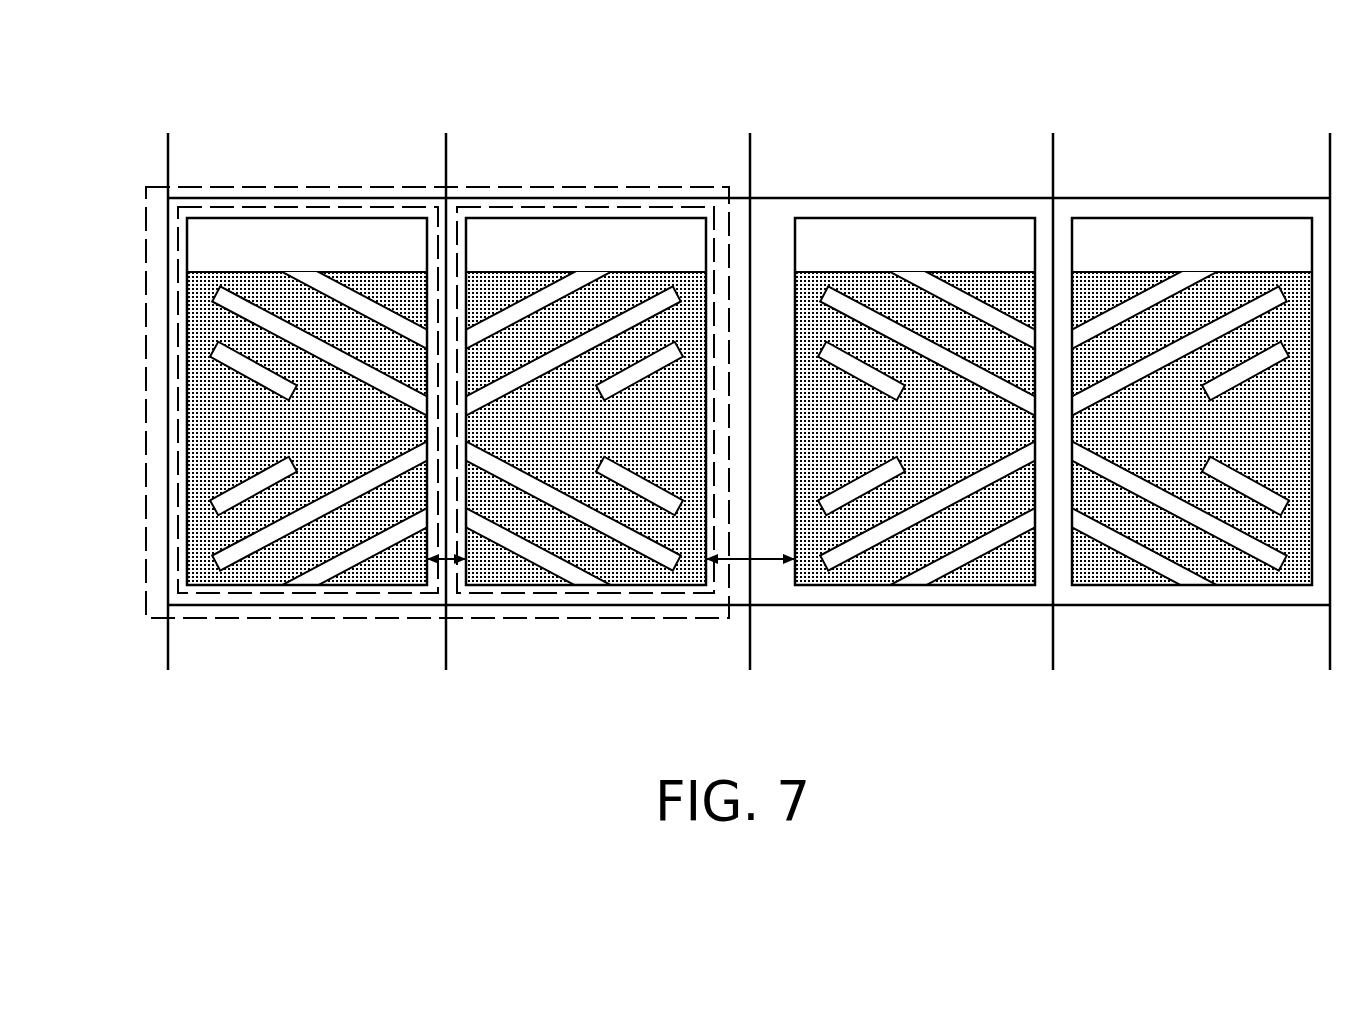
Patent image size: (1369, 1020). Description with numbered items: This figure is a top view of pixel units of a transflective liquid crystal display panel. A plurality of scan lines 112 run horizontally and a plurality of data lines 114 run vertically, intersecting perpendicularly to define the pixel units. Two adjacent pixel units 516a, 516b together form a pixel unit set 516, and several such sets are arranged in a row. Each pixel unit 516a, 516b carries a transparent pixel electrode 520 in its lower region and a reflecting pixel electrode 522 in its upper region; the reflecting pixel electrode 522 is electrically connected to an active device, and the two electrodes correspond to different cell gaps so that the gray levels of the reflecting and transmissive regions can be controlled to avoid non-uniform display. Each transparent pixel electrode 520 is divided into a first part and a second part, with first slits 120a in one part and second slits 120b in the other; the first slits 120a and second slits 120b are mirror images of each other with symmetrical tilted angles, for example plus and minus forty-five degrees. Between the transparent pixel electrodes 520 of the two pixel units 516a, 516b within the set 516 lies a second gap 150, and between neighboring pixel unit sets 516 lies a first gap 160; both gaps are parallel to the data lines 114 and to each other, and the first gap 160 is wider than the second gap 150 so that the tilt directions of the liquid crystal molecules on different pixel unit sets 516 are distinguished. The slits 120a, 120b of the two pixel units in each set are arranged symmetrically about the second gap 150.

The scan line 112 is at (360, 197).
The data line 114 is at (168, 172).
The first slit 120a is at (228, 355).
The second slit 120b is at (253, 537).
The second gap 150 is at (435, 565).
The first gap 160 is at (740, 562).
The pixel unit set 516 is at (510, 185).
The pixel unit 516a is at (240, 202).
The pixel unit 516b is at (680, 202).
The transparent pixel electrode 520 is at (232, 430).
The reflecting pixel electrode 522 is at (611, 240).